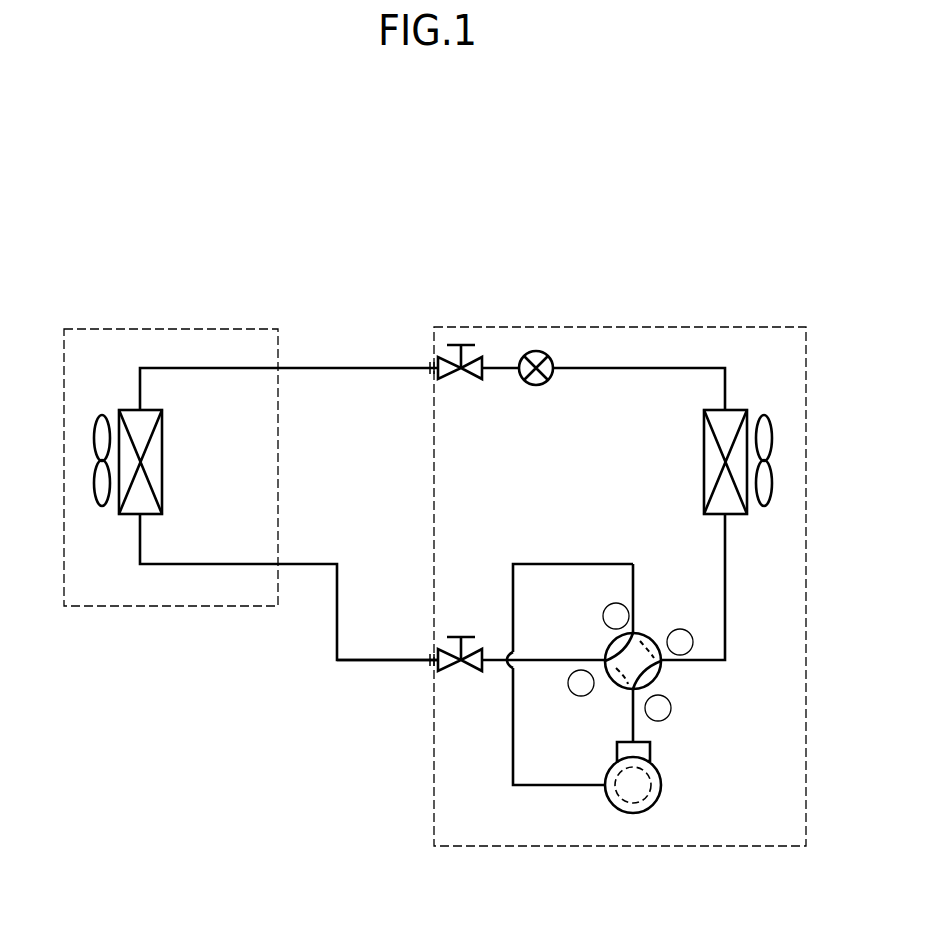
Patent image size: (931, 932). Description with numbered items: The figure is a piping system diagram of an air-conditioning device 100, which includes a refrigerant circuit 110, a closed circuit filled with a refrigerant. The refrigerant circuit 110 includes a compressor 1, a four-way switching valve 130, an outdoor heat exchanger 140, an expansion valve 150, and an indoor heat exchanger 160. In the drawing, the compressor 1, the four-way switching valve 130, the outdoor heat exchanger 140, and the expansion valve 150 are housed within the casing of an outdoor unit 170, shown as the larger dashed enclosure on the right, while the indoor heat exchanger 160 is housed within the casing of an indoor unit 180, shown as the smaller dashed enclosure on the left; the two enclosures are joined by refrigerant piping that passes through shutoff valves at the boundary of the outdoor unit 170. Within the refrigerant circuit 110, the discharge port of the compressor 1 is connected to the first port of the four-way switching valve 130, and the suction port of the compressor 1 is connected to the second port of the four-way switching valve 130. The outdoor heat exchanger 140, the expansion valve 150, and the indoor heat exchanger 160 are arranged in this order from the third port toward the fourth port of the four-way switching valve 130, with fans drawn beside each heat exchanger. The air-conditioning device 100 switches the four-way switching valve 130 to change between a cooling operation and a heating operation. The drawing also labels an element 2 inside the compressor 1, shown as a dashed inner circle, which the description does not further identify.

The air-conditioning device 100 is at (190, 258).
The refrigerant circuit 110 is at (383, 658).
The four-way switching valve 130 is at (659, 679).
The outdoor heat exchanger 140 is at (703, 461).
The expansion valve 150 is at (536, 386).
The indoor heat exchanger 160 is at (163, 460).
The outdoor unit 170 is at (435, 790).
The indoor unit 180 is at (143, 606).
The compressor 1 is at (662, 786).
The motor 2 is at (603, 801).